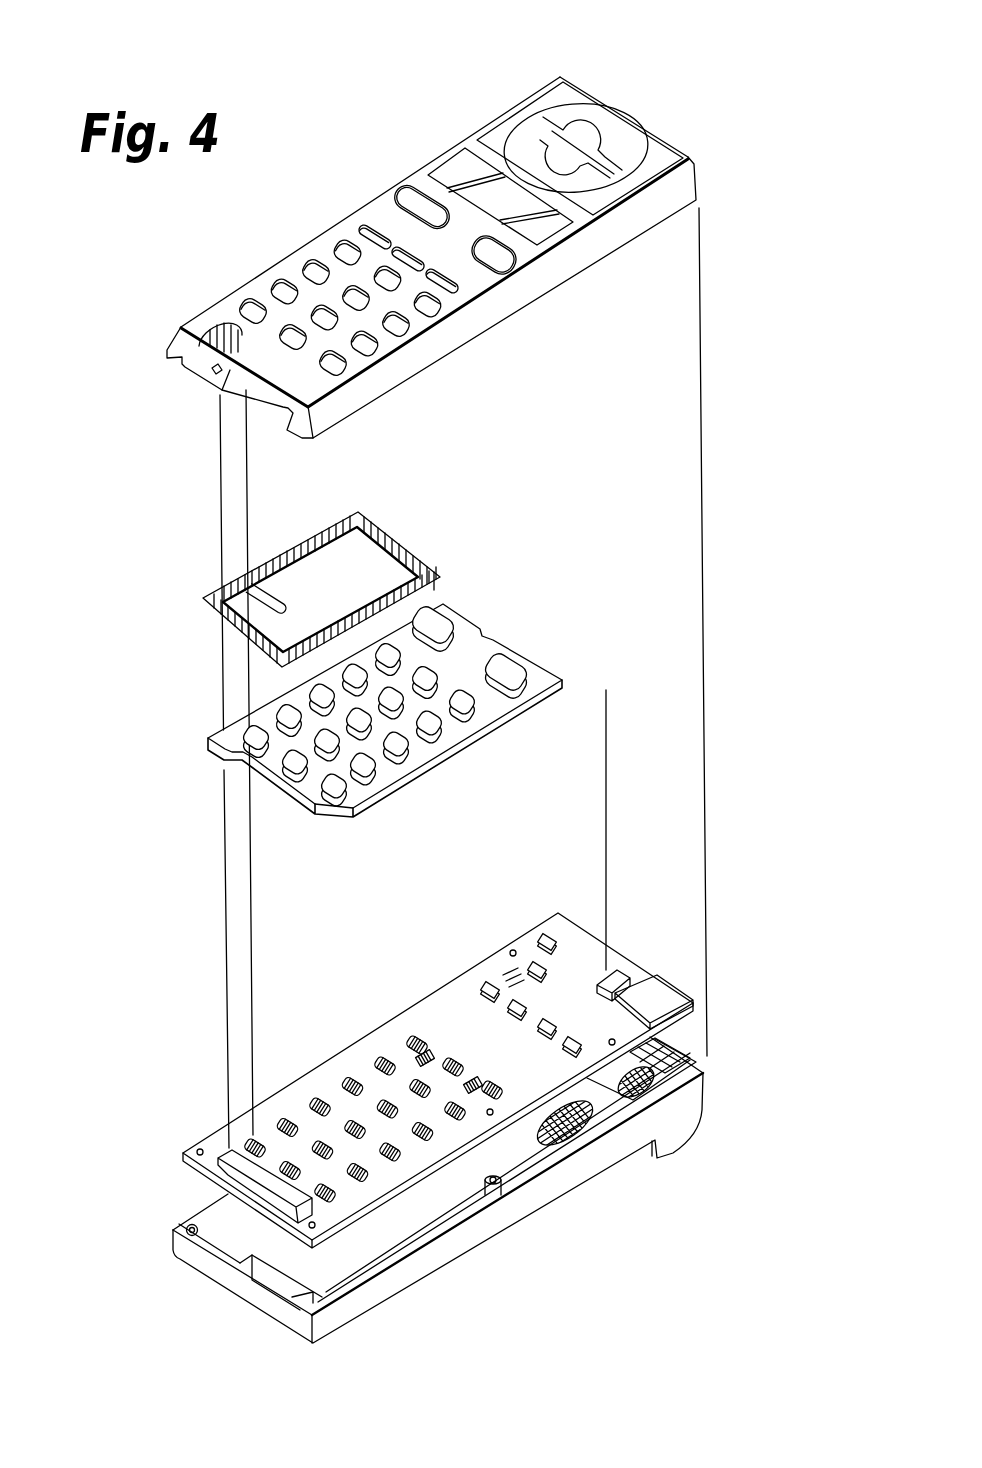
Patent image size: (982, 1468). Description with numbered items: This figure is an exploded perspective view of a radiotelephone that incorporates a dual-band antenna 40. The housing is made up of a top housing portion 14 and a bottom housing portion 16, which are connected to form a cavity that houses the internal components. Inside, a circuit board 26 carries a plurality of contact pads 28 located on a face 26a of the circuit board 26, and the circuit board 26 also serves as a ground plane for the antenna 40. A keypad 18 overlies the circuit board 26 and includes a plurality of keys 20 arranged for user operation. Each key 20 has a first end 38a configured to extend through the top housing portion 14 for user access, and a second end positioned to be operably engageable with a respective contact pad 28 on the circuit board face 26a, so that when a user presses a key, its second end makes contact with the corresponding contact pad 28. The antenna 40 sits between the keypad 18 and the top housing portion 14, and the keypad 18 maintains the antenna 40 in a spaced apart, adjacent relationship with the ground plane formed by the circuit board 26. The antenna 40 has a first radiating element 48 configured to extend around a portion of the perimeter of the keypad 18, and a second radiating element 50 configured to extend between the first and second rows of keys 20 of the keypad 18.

The top housing portion 14 is at (573, 78).
The bottom housing portion 16 is at (703, 1097).
The keypad 18 is at (345, 682).
The keys 20 is at (345, 704).
The circuit board 26 is at (367, 1077).
The circuit board face 26a is at (205, 1160).
The contact pads 28 is at (471, 1078).
The first end of key 38a is at (425, 678).
The dual-band antenna 40 is at (300, 577).
The first radiating element 48 is at (216, 589).
The second radiating element 50 is at (262, 617).